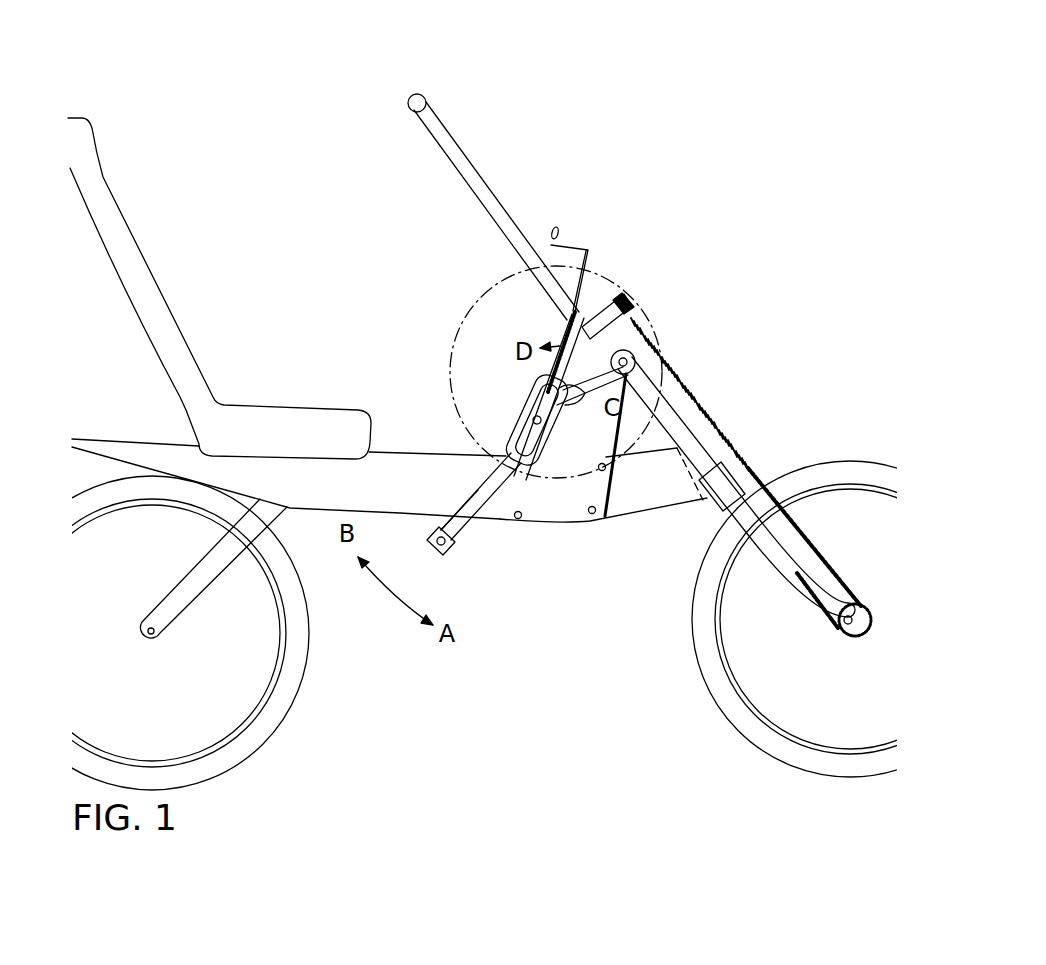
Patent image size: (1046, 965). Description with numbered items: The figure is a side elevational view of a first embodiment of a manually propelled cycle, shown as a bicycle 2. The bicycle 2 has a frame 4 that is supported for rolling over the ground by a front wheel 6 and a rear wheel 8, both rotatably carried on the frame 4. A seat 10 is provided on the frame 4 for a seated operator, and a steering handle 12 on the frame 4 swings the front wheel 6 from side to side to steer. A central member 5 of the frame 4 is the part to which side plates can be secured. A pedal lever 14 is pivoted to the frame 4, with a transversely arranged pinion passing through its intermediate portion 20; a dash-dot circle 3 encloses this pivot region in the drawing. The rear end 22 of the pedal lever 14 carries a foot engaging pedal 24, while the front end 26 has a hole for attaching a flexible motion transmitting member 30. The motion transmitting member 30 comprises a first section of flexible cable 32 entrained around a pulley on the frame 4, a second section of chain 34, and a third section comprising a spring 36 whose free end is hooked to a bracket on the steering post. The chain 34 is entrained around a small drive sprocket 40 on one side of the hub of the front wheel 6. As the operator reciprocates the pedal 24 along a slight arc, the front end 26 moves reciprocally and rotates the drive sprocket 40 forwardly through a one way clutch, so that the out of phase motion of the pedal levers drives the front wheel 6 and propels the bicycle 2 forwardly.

The bicycle 2 is at (521, 165).
The detail region 3 is at (485, 298).
The frame 4 is at (618, 533).
The central member 5 is at (393, 463).
The front wheel 6 is at (846, 477).
The rear wheel 8 is at (240, 748).
The seat 10 is at (120, 247).
The steering handle 12 is at (421, 95).
The pedal lever 14 is at (487, 493).
The intermediate portion 20 is at (528, 395).
The rear end 22 is at (460, 516).
The pedal 24 is at (433, 553).
The front end 26 is at (612, 382).
The motion transmitting member 30 is at (756, 431).
The flexible cable 32 is at (693, 500).
The chain 34 is at (827, 558).
The spring 36 is at (700, 405).
The drive sprocket 40 is at (853, 637).